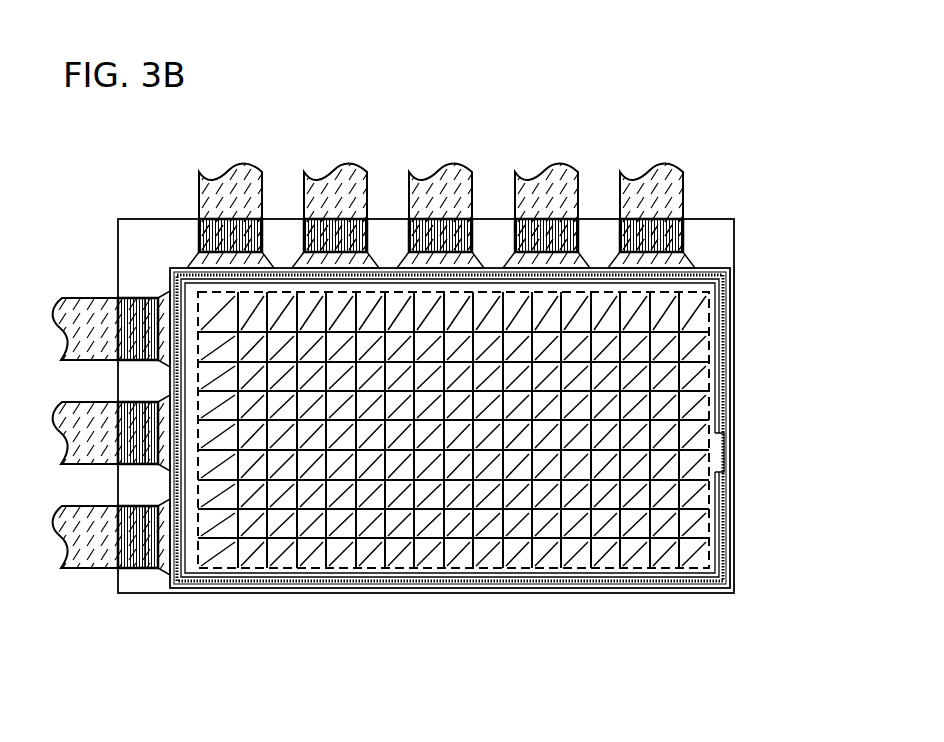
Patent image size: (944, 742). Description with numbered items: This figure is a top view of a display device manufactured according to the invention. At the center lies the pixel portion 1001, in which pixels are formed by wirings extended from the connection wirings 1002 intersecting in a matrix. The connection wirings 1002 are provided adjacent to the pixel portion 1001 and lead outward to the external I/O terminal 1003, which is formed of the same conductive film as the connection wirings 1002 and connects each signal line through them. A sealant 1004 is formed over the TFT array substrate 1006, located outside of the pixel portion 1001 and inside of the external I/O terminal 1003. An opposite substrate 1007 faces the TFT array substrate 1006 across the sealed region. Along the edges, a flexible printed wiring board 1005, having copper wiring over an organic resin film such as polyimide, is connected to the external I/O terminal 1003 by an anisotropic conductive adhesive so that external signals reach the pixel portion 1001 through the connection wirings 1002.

The pixel portion 1001 is at (540, 568).
The connection wirings 1002 is at (685, 270).
The external I/O terminal 1003 is at (672, 240).
The sealant 1004 is at (735, 362).
The flexible printed wiring board 1005 is at (663, 203).
The TFT array substrate 1006 is at (135, 278).
The opposite substrate 1007 is at (183, 272).